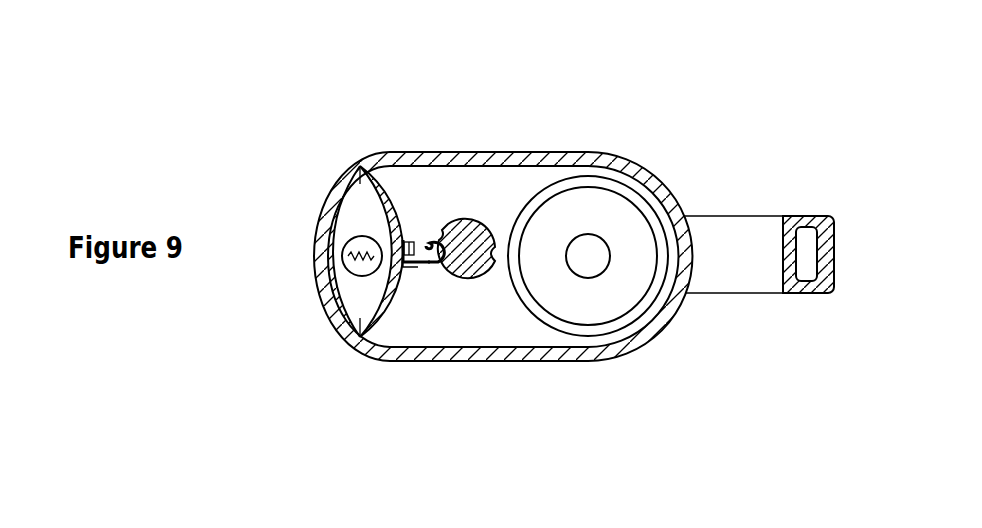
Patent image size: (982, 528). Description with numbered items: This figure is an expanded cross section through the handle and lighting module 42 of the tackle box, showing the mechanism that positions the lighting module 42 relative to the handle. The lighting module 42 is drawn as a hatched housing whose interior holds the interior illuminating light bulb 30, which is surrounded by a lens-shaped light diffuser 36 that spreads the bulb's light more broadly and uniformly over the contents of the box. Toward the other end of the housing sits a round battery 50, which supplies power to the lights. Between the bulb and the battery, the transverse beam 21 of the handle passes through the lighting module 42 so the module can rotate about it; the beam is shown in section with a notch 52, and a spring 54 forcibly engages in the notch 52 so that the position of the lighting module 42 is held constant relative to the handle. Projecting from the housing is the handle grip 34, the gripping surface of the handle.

The transverse beam 21 is at (462, 222).
The interior illuminating light bulb 30 is at (360, 236).
The handle grip 34 is at (808, 217).
The light diffuser 36 is at (333, 313).
The lighting module 42 is at (517, 151).
The battery 50 is at (588, 177).
The notch 52 is at (443, 232).
The spring 54 is at (430, 264).